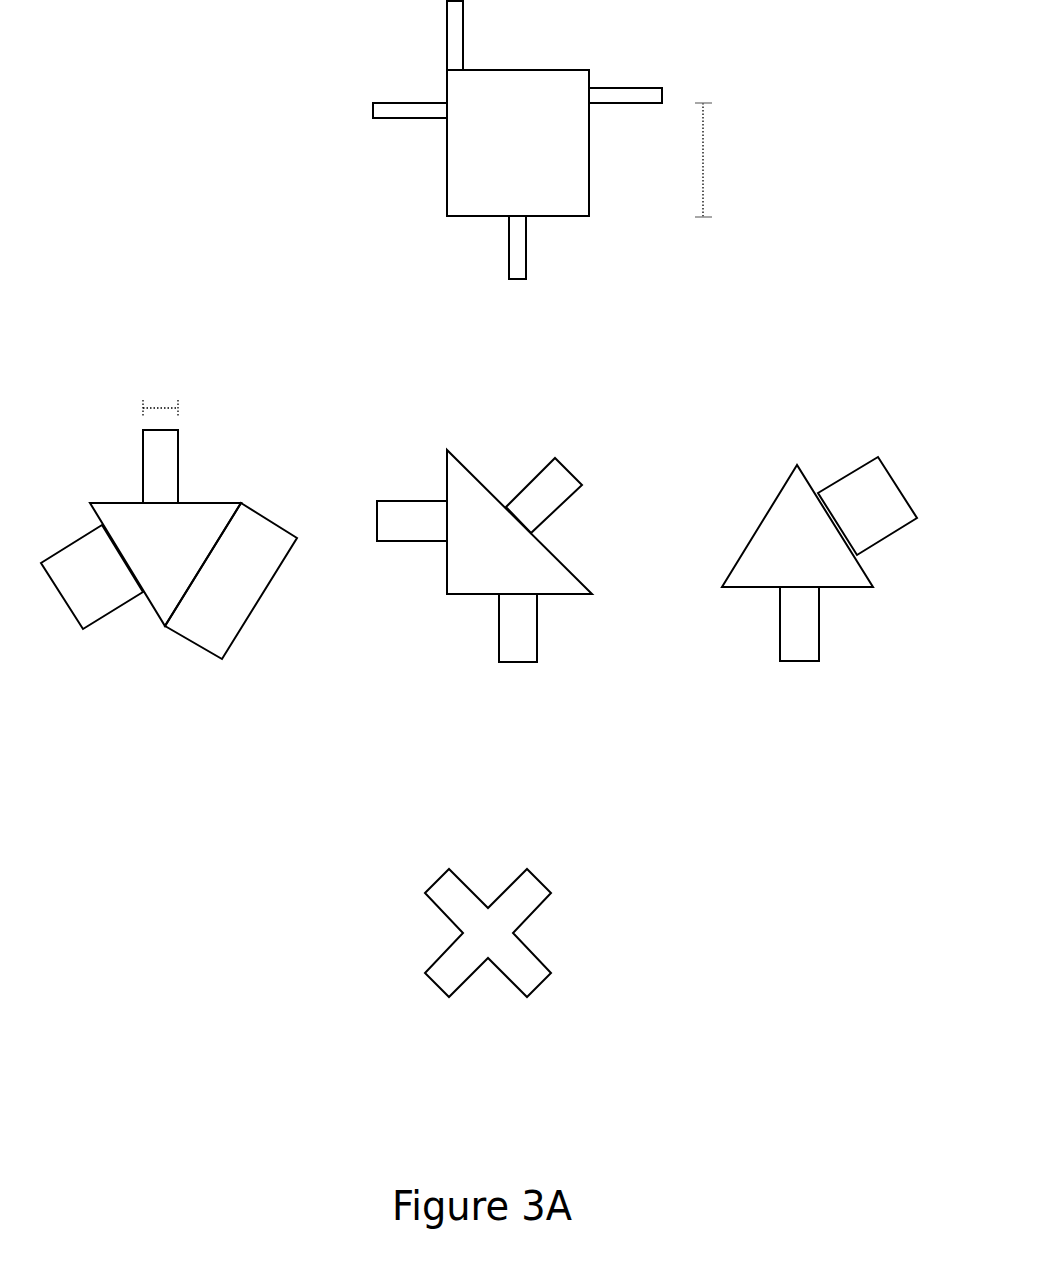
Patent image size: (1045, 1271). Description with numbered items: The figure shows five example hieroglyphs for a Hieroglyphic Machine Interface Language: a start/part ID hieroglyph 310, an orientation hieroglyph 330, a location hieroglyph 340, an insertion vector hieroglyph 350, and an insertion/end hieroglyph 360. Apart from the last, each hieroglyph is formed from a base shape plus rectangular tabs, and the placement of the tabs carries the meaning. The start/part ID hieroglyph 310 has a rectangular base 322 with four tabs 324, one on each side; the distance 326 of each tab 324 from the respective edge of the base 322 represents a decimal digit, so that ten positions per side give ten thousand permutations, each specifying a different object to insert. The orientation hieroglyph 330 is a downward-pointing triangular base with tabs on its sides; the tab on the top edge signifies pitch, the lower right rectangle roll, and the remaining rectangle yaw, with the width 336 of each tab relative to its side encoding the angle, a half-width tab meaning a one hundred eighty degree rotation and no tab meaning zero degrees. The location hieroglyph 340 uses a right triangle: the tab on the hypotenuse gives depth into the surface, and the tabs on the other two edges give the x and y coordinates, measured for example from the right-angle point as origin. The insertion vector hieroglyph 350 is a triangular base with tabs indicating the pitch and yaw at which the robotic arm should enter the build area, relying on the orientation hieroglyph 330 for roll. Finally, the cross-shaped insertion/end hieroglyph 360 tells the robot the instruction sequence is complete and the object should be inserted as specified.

The start/part ID hieroglyph 310 is at (312, 84).
The rectangular base 322 is at (560, 232).
The tab 324 is at (645, 74).
The distance 326 is at (710, 165).
The orientation hieroglyph 330 is at (185, 749).
The width 336 is at (168, 387).
The location hieroglyph 340 is at (508, 749).
The insertion vector hieroglyph 350 is at (817, 749).
The insertion/end hieroglyph 360 is at (504, 1084).